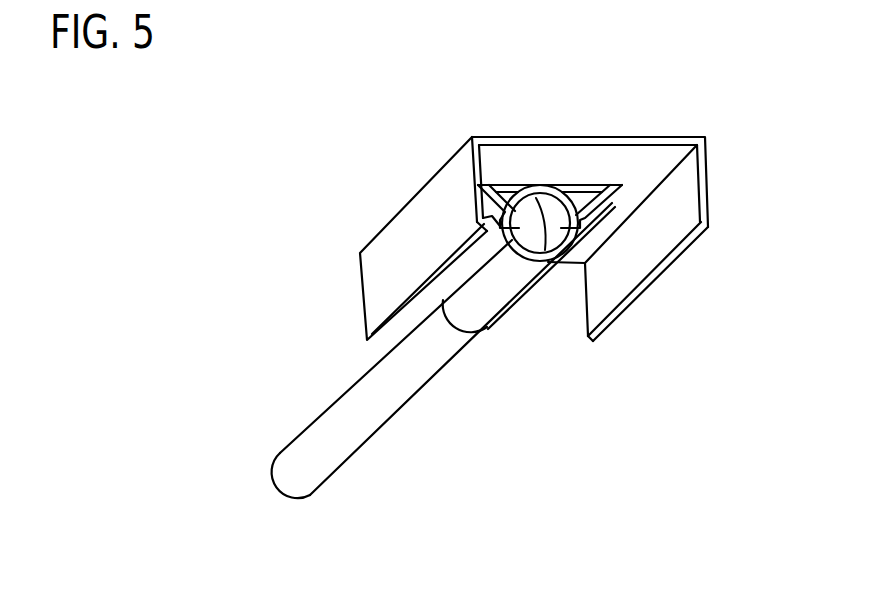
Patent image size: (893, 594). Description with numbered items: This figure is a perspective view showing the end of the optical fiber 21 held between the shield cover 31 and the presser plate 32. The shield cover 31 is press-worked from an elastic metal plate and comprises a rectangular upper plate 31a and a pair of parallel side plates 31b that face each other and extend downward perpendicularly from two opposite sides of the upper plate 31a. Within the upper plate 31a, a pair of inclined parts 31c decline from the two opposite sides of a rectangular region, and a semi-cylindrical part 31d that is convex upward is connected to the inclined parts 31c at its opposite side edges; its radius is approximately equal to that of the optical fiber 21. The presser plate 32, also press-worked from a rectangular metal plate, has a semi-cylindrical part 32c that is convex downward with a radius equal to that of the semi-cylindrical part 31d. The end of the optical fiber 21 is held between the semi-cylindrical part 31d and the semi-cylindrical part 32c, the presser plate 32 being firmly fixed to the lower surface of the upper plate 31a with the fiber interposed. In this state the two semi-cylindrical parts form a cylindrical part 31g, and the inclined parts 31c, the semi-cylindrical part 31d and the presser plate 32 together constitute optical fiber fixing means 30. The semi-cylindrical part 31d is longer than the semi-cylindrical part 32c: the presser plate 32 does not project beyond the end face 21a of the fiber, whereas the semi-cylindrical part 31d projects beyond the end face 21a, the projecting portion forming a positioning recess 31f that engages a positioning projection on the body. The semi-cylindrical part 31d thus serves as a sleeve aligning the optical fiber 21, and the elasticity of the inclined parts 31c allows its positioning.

The optical fiber fixing means 30 is at (605, 452).
The shield cover 31 is at (450, 157).
The upper plate 31a is at (663, 136).
The side plates 31b is at (397, 252).
The inclined parts 31c is at (478, 253).
The semi-cylindrical part 31d is at (513, 203).
The positioning recess 31f is at (558, 203).
The cylindrical part 31g is at (637, 396).
The presser plate 32 is at (473, 310).
The semi-cylindrical part 32c is at (512, 283).
The optical fiber 21 is at (332, 405).
The end face 21a is at (550, 240).